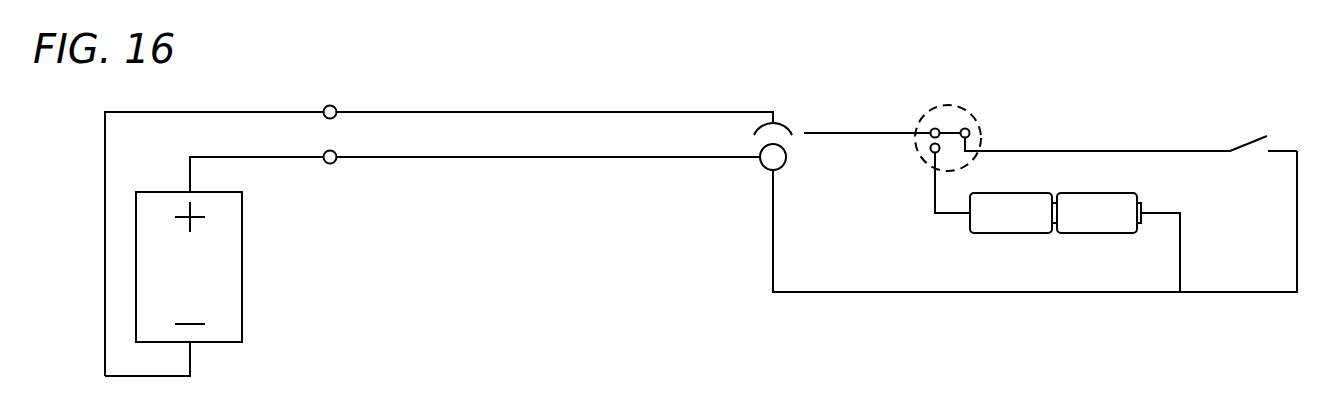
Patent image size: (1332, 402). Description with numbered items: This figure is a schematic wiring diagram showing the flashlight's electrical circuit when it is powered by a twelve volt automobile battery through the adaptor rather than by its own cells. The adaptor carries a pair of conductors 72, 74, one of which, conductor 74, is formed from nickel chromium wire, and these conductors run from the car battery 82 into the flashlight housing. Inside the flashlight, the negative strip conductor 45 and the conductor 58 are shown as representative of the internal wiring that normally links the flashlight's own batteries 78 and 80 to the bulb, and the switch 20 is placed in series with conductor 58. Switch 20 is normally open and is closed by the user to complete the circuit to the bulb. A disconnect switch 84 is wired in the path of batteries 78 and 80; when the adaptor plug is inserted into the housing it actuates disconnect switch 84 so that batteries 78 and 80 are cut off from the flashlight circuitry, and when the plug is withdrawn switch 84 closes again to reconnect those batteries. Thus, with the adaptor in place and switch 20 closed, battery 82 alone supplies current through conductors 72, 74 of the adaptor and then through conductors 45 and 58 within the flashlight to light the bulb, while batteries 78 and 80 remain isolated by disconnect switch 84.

The switch 20 is at (1242, 142).
The negative strip conductor 45 is at (1103, 151).
The conductor 58 is at (818, 292).
The conductor 72 is at (191, 111).
The conductor 74 is at (430, 157).
The battery 78 is at (1103, 220).
The battery 80 is at (1008, 215).
The battery 82 is at (218, 259).
The disconnect switch 84 is at (952, 118).